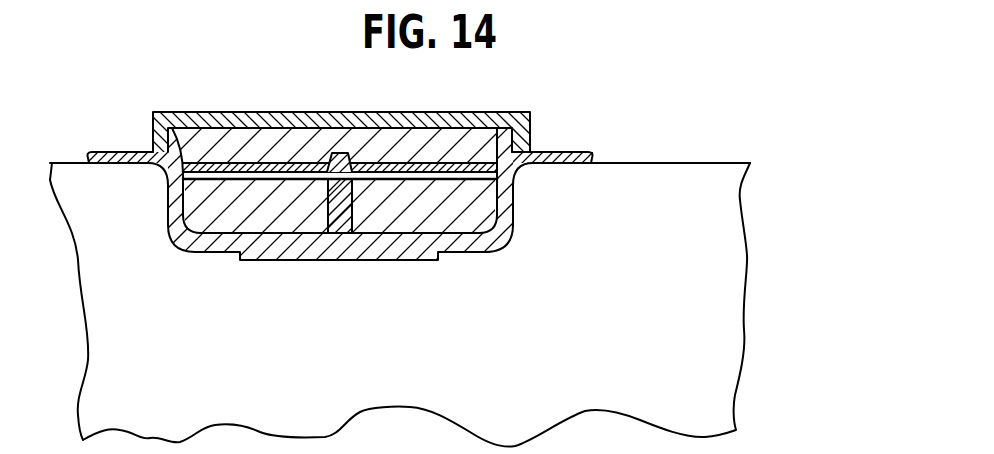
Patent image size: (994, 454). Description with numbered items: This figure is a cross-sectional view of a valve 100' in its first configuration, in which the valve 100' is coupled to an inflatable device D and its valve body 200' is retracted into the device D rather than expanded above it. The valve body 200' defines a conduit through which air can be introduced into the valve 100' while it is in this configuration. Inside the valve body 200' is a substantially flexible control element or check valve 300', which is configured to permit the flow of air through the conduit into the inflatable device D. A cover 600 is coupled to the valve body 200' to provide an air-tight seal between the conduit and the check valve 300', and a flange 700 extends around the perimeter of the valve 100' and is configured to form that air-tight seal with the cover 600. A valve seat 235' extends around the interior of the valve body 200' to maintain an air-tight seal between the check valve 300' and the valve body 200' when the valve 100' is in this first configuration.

The valve 100' is at (376, 173).
The valve body 200' is at (347, 194).
The check valve 300' is at (366, 228).
The valve seat 235' is at (338, 120).
The cover 600 is at (197, 117).
The flange 700 is at (505, 135).
The inflatable device D is at (727, 243).